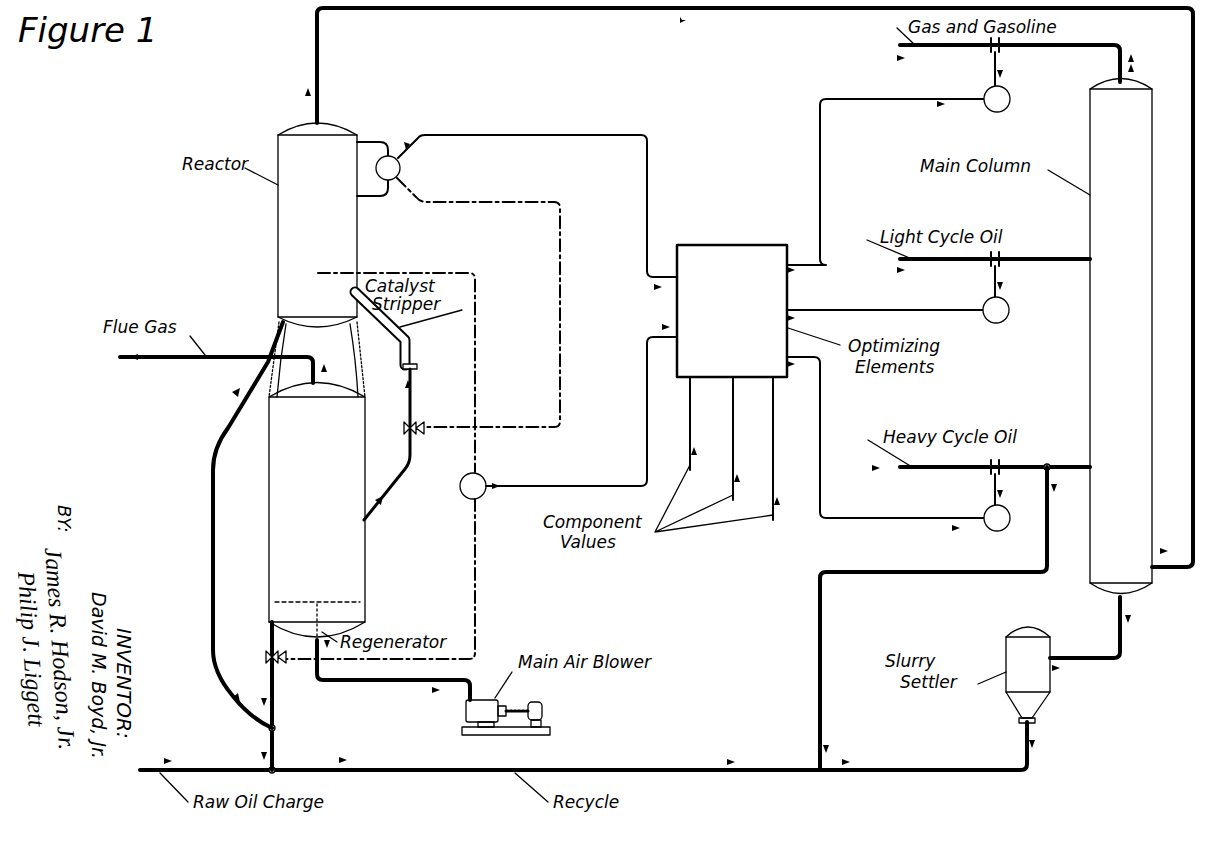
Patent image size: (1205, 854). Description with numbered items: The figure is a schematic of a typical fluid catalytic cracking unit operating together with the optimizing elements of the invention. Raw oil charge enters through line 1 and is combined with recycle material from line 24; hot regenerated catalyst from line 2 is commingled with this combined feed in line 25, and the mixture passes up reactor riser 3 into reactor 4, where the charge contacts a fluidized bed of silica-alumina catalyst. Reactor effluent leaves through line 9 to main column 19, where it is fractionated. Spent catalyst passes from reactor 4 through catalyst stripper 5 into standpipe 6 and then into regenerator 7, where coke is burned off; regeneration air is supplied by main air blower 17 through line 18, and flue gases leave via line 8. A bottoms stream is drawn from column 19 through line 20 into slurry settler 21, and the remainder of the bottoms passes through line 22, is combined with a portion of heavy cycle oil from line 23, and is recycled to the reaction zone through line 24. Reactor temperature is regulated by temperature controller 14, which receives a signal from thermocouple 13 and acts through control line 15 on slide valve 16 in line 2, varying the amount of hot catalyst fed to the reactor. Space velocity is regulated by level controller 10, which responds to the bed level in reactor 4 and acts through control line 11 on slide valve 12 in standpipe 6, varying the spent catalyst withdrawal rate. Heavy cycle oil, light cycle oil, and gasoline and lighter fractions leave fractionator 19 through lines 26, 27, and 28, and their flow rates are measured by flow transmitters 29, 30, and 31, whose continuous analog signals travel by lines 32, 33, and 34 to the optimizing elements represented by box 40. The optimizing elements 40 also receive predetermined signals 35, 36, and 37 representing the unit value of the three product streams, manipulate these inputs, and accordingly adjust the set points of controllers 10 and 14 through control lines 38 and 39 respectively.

The raw oil charge line 1 is at (195, 770).
The regenerated catalyst line 2 is at (268, 682).
The reactor riser 3 is at (212, 520).
The reactor 4 is at (278, 215).
The catalyst stripper 5 is at (412, 338).
The standpipe 6 is at (414, 395).
The regenerator 7 is at (268, 478).
The flue gas line 8 is at (222, 360).
The reactor effluent line 9 is at (1178, 590).
The level controller 10 is at (398, 160).
The control line 11 is at (562, 242).
The slide valve 12 is at (418, 440).
The thermocouple 13 is at (395, 272).
The temperature controller 14 is at (482, 474).
The control line 15 is at (478, 618).
The slide valve 16 is at (266, 652).
The main air blower 17 is at (540, 725).
The regeneration air line 18 is at (357, 682).
The main column 19 is at (1090, 135).
The bottoms line 20 is at (1122, 640).
The slurry settler 21 is at (1012, 628).
The bottoms recycle line 22 is at (900, 770).
The heavy cycle oil recycle line 23 is at (818, 640).
The recycle line 24 is at (585, 770).
The combined feed line 25 is at (276, 762).
The heavy cycle oil line 26 is at (1066, 470).
The light cycle oil line 27 is at (1070, 262).
The gasoline and lighter fractions line 28 is at (1048, 48).
The flow transmitter 29 is at (988, 506).
The flow transmitter 30 is at (988, 298).
The flow transmitter 31 is at (988, 88).
The flow signal line 32 is at (825, 495).
The flow signal line 33 is at (855, 310).
The flow signal line 34 is at (850, 104).
The predetermined value signal 35 is at (688, 428).
The predetermined value signal 36 is at (731, 450).
The predetermined value signal 37 is at (772, 470).
The control line 38 is at (648, 160).
The control line 39 is at (644, 462).
The optimizing elements 40 is at (712, 243).